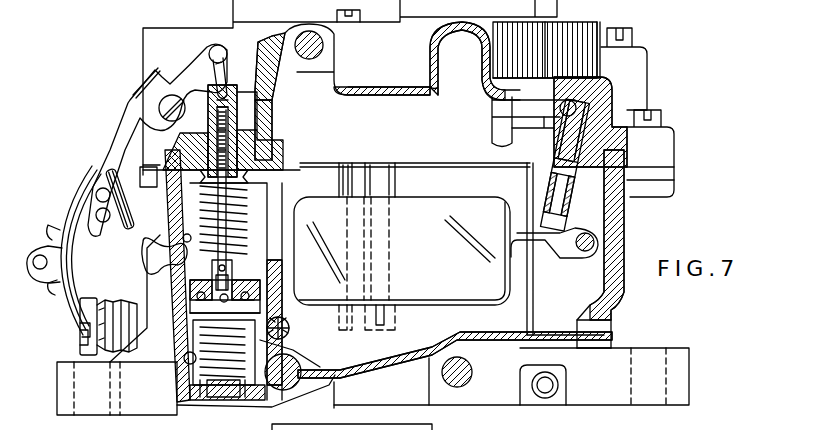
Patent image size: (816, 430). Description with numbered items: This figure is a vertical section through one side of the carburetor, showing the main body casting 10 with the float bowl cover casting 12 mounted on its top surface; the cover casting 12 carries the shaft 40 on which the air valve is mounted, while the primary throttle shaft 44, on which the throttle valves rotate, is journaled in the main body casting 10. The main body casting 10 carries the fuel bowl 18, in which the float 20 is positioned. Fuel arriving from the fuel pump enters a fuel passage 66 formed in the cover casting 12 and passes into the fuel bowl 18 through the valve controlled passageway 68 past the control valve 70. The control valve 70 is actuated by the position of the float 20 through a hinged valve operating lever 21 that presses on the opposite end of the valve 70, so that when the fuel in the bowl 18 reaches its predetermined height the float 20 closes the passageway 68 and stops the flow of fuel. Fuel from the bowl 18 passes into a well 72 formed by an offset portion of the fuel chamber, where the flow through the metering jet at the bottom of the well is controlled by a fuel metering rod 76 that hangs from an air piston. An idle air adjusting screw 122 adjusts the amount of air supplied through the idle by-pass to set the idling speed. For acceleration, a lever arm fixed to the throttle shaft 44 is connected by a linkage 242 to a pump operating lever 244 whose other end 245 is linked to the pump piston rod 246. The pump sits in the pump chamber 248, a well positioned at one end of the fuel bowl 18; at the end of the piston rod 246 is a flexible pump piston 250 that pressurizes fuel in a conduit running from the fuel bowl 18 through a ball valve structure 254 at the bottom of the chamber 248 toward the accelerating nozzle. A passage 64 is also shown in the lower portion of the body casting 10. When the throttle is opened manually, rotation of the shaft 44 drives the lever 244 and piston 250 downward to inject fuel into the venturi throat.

The main body casting 10 is at (624, 287).
The float bowl cover casting 12 is at (405, 90).
The float bowl 18 is at (430, 352).
The float 20 is at (446, 267).
The hinged valve operating lever 21 is at (541, 244).
The shaft 40 is at (330, 47).
The primary throttle shaft 44 is at (302, 366).
The passage 64 is at (472, 371).
The fuel passage 66 is at (544, 107).
The valve controlled passageway 68 is at (544, 128).
The control valve 70 is at (548, 181).
The well 72 is at (352, 165).
The fuel metering rod 76 is at (377, 165).
The idle air adjusting screw 122 is at (96, 305).
The linkage 242 is at (92, 177).
The pump operating lever 244 is at (133, 132).
The other end 245 is at (199, 56).
The pump piston rod 246 is at (284, 113).
The pump chamber 248 is at (182, 239).
The flexible pump piston 250 is at (190, 298).
The ball valve structure 254 is at (290, 326).